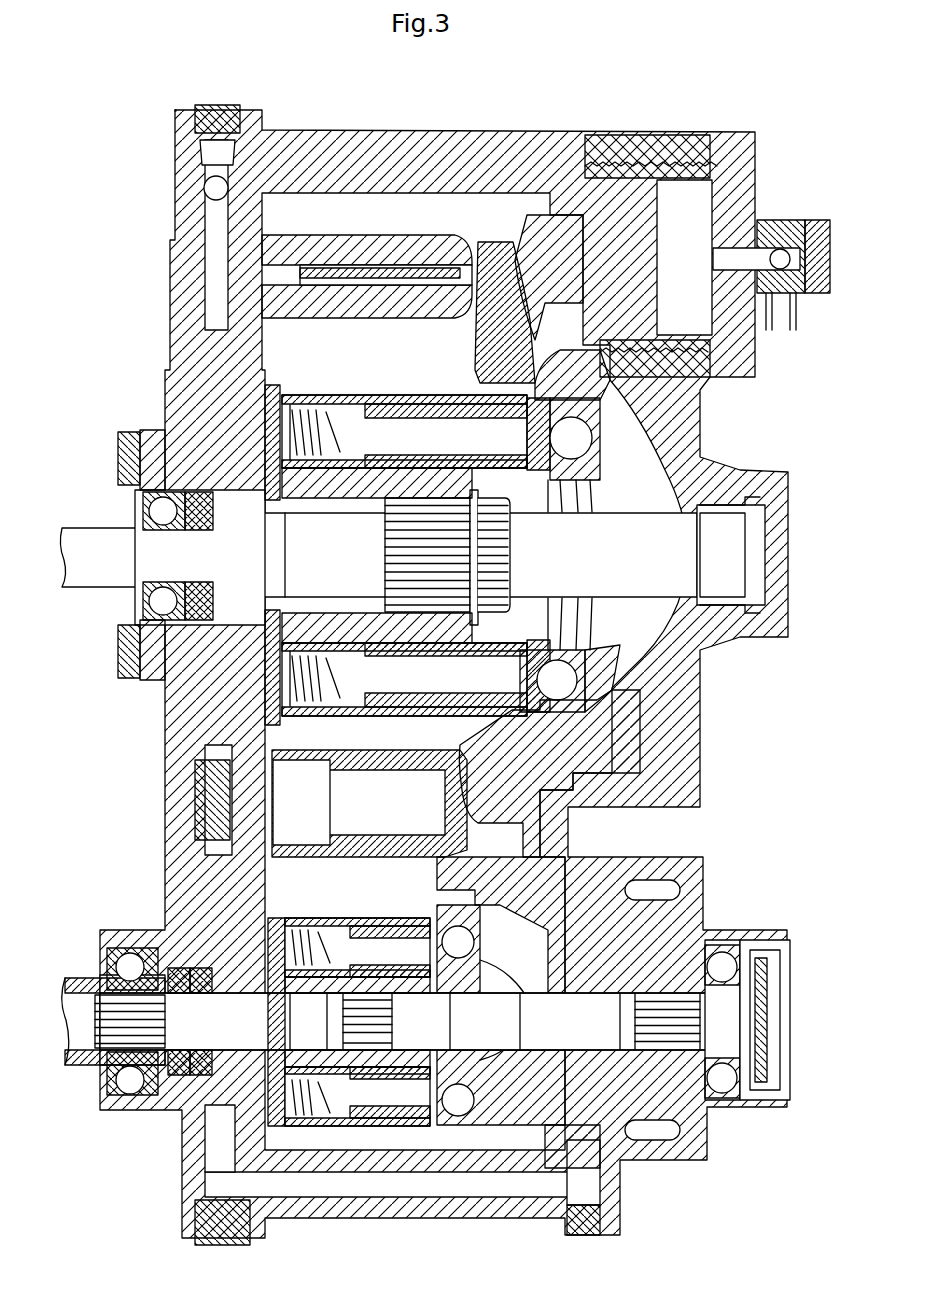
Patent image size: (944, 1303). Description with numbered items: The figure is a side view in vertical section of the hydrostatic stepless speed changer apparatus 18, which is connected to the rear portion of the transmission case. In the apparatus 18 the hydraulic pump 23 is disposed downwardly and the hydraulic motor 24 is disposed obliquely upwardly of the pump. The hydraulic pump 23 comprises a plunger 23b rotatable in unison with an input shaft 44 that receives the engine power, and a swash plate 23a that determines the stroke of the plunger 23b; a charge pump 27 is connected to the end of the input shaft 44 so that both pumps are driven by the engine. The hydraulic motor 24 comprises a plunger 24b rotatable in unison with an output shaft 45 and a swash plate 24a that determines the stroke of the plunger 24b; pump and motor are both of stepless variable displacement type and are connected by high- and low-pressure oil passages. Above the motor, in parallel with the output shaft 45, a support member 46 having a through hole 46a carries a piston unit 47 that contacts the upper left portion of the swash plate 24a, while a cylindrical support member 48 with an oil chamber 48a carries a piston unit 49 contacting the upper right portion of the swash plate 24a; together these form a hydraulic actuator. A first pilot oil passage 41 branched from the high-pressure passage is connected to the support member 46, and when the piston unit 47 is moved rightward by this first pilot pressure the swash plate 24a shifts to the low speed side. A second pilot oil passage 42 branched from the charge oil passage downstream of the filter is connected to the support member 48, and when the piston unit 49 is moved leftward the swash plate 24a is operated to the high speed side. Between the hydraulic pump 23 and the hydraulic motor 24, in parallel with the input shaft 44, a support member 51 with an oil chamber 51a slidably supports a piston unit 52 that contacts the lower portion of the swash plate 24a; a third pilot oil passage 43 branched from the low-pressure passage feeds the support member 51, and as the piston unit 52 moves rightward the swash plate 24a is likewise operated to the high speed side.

The hydrostatic stepless speed changer apparatus 18 is at (130, 112).
The hydraulic pump 23 is at (424, 1136).
The swash plate 23a is at (505, 1088).
The plunger 23b is at (412, 893).
The hydraulic motor 24 is at (385, 390).
The swash plate 24a is at (640, 690).
The plunger 24b is at (505, 405).
The charge pump 27 is at (672, 930).
The first pilot oil passage 41 is at (210, 232).
The second pilot oil passage 42 is at (785, 318).
The third pilot oil passage 43 is at (208, 783).
The input shaft 44 is at (105, 1005).
The output shaft 45 is at (95, 528).
The support member 46 is at (290, 300).
The through hole 46a is at (335, 272).
The piston unit 47 is at (422, 240).
The cylindrical support member 48 is at (648, 163).
The oil chamber 48a is at (700, 200).
The piston unit 49 is at (530, 218).
The support member 51 is at (345, 755).
The oil chamber 51a is at (300, 830).
The piston unit 52 is at (478, 818).